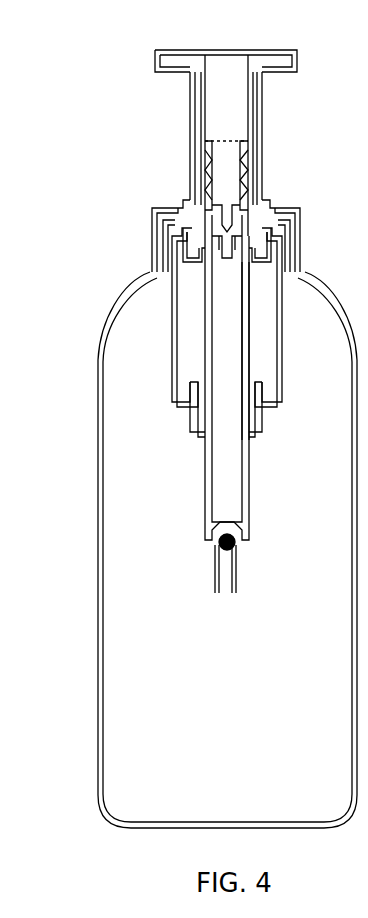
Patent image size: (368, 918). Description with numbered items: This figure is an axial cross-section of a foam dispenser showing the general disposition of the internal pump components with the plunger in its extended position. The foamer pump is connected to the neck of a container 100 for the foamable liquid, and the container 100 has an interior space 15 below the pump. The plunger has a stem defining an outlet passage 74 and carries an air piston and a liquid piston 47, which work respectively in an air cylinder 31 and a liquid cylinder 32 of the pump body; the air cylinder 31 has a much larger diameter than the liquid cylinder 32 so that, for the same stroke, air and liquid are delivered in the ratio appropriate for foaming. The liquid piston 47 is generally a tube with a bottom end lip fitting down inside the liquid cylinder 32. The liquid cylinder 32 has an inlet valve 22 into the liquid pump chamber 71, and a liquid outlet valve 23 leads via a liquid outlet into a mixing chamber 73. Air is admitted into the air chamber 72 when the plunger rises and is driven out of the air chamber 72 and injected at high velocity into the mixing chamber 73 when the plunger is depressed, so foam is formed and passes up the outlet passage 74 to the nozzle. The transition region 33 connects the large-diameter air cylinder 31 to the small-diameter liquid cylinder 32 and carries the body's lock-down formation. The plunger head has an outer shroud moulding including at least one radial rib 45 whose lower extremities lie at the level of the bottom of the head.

The container 100 is at (98, 708).
The interior space 15 is at (246, 733).
The liquid outlet valve 23 is at (205, 250).
The radial rib 45 is at (278, 72).
The outlet passage 74 is at (228, 117).
The mixing chamber 73 is at (230, 218).
The air cylinder 31 is at (172, 355).
The air chamber 72 is at (206, 339).
The transition region 33 is at (262, 424).
The liquid piston 47 is at (248, 360).
The liquid cylinder 32 is at (205, 484).
The liquid pump chamber 71 is at (241, 471).
The inlet valve 22 is at (212, 545).